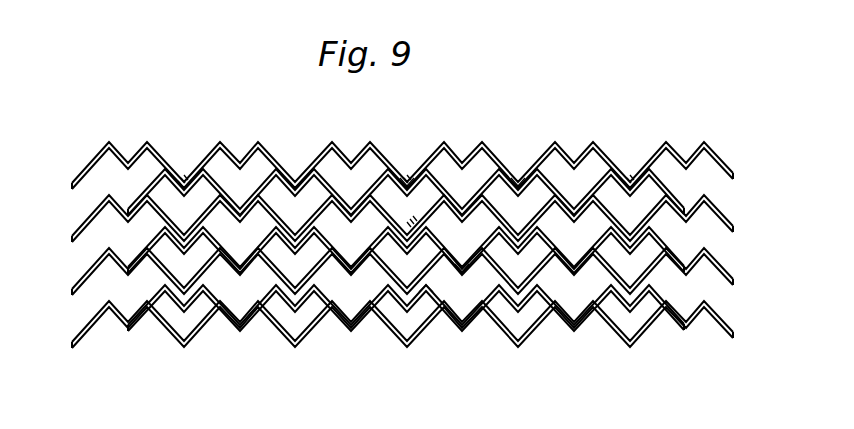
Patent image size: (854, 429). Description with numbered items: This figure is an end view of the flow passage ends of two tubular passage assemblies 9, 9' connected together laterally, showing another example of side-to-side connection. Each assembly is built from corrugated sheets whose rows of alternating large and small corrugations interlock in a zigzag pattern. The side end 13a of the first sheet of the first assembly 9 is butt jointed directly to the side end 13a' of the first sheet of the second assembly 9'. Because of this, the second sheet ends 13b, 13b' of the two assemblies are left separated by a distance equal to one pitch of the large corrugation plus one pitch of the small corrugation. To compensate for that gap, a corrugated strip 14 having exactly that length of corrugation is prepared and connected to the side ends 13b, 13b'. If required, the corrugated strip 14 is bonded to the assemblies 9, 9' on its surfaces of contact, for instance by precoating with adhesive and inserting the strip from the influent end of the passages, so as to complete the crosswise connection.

The first tubular passage assembly 9 is at (402, 141).
The second tubular passage assembly 9' is at (406, 152).
The corrugated strip 14 is at (413, 225).
The second sheet end 13b is at (408, 146).
The second sheet end of second assembly 13b' is at (519, 148).
The side end of first sheet 13a is at (470, 314).
The side end of first sheet of second assembly 13a' is at (381, 316).